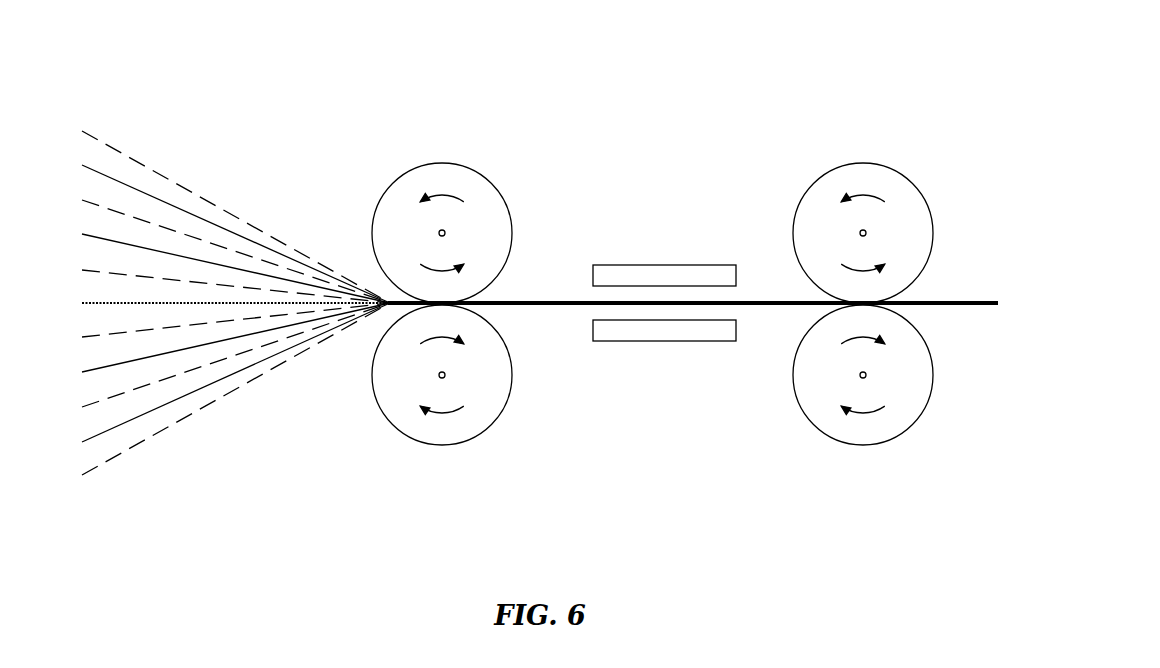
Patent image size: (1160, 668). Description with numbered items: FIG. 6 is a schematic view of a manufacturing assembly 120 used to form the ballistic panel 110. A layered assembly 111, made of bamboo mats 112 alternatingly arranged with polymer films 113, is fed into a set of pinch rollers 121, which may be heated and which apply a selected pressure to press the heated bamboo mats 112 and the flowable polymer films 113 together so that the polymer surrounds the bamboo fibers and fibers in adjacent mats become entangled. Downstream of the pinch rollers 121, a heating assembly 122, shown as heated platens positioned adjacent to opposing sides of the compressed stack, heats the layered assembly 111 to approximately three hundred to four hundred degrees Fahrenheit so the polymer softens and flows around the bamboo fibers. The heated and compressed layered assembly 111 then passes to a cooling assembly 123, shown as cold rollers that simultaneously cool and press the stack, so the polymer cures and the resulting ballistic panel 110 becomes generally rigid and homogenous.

The ballistic panel 110 is at (968, 310).
The layered assembly 111 is at (385, 300).
The bamboo mats 112 is at (193, 257).
The polymer films 113 is at (243, 358).
The manufacturing assembly 120 is at (782, 103).
The pinch rollers 121 is at (493, 282).
The heating assembly 122 is at (633, 250).
The cooling assembly 123 is at (765, 425).